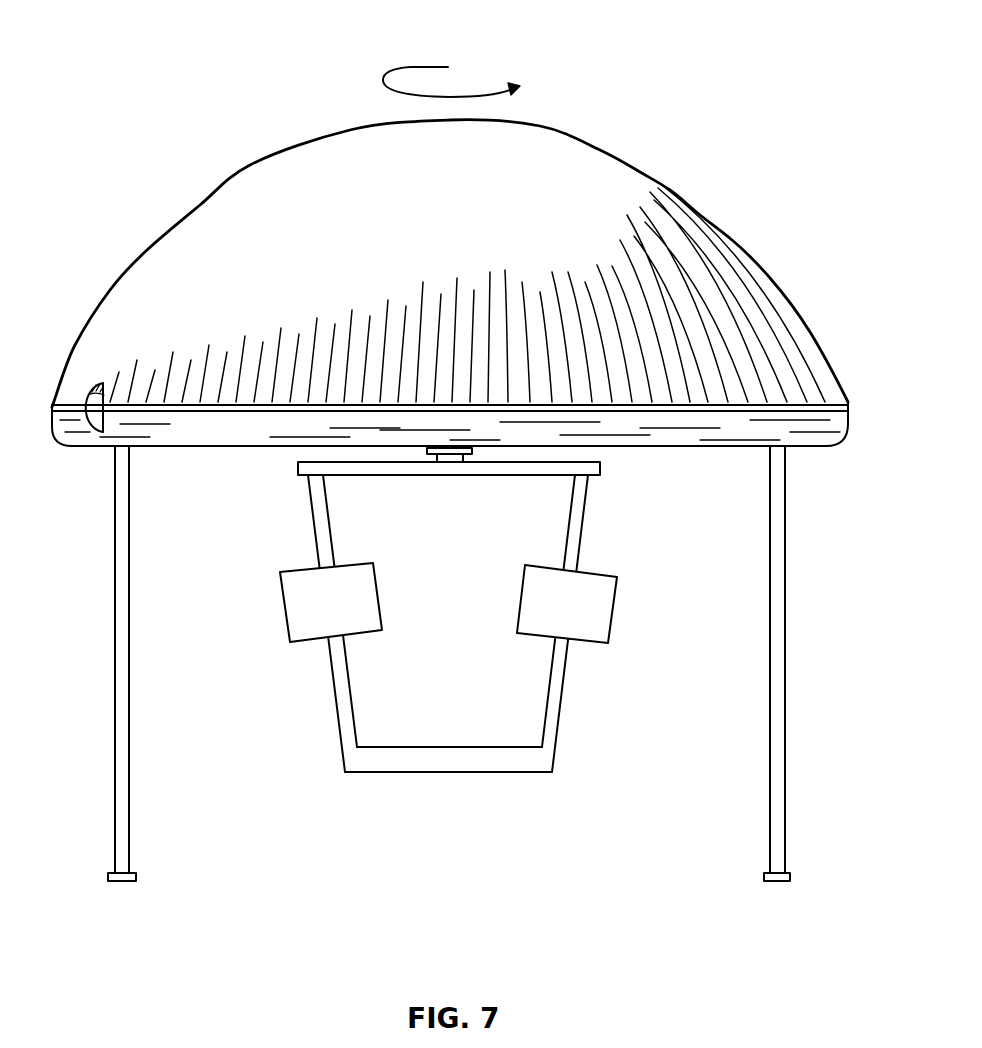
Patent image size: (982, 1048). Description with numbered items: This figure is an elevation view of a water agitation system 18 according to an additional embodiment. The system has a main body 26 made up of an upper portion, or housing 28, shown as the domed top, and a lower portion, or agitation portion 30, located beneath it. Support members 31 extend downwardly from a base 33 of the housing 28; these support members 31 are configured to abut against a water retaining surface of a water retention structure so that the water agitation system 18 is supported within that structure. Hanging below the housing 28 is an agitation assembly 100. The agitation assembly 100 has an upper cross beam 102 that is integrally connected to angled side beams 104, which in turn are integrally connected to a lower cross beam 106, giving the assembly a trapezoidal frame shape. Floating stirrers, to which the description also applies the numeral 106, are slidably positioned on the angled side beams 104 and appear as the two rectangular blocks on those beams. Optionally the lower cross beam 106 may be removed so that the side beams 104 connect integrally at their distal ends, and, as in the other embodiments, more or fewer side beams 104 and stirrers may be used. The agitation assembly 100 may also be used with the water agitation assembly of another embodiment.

The water agitation system 18 is at (456, 448).
The main body 26 is at (441, 283).
The housing 28 is at (252, 166).
The agitation portion 30 is at (456, 663).
The support members 31 is at (113, 585).
The base 33 is at (95, 448).
The agitation assembly 100 is at (469, 647).
The upper cross beam 102 is at (447, 478).
The angled side beams 104 is at (313, 514).
The lower cross beam 106 is at (450, 773).